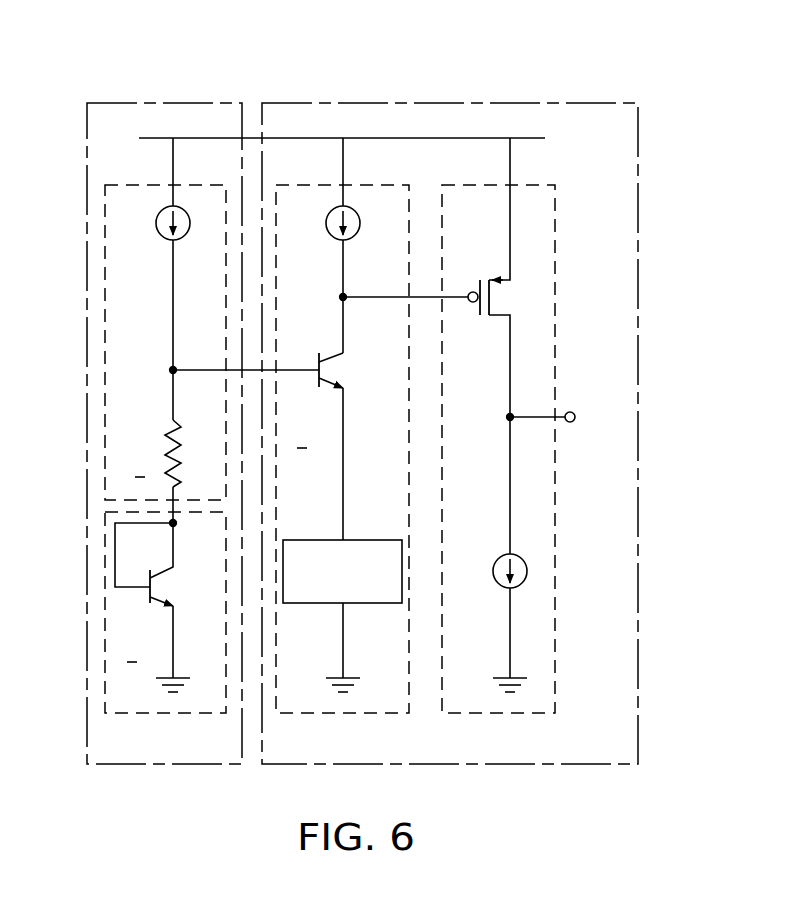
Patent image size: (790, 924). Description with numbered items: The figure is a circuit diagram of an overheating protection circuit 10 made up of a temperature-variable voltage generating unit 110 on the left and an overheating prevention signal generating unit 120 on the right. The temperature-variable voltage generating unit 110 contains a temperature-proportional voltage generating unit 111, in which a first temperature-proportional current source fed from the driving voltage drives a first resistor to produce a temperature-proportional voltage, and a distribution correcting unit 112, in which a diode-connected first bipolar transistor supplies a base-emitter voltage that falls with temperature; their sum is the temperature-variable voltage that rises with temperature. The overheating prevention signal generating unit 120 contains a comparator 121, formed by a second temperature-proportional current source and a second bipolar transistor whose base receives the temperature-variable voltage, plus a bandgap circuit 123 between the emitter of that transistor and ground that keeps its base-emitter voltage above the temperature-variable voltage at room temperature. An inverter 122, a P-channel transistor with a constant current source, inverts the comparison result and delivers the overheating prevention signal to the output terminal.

The overheating protection circuit 10 is at (375, 29).
The temperature-variable voltage generating unit 110 is at (182, 103).
The temperature-proportional voltage generating unit 111 is at (160, 185).
The distribution correcting unit 112 is at (158, 713).
The overheating prevention signal generating unit 120 is at (580, 103).
The comparator 121 is at (350, 185).
The inverter 122 is at (535, 185).
The bandgap circuit 123 is at (373, 540).